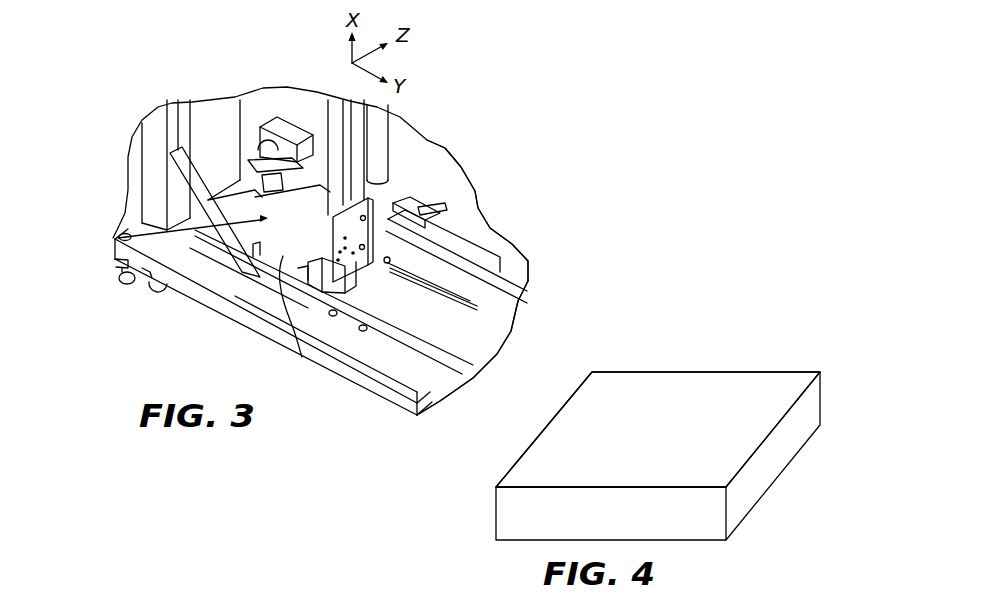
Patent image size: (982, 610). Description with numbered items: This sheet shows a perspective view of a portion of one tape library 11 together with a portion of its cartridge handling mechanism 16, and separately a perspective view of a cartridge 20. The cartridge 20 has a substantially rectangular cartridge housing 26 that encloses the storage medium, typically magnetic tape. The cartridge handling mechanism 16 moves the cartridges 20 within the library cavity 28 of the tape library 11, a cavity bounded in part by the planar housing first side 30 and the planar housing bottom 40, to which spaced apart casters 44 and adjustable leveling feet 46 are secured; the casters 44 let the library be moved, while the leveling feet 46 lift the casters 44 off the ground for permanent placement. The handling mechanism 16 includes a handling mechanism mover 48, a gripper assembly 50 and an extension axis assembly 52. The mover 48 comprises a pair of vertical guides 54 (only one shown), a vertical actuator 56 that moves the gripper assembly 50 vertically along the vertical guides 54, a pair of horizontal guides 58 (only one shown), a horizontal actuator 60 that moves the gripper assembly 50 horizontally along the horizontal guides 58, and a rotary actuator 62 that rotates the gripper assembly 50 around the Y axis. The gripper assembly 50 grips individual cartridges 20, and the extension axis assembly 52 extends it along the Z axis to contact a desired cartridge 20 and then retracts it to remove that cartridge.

In FIG. 3, the tape library 11 is at (494, 185).
In FIG. 3, the cartridge handling mechanism 16 is at (301, 173).
In FIG. 4, the cartridge 20 is at (755, 367).
In FIG. 4, the cartridge housing 26 is at (753, 408).
In FIG. 3, the library cavity 28 is at (477, 342).
In FIG. 3, the housing first side 30 is at (213, 110).
In FIG. 3, the housing bottom 40 is at (233, 306).
In FIG. 3, the caster 44 is at (158, 292).
In FIG. 3, the leveling foot 46 is at (124, 276).
In FIG. 3, the handling mechanism mover 48 is at (376, 283).
In FIG. 3, the gripper assembly 50 is at (262, 165).
In FIG. 3, the extension axis assembly 52 is at (282, 231).
In FIG. 3, the vertical guide 54 is at (372, 128).
In FIG. 3, the vertical actuator 56 is at (302, 358).
In FIG. 3, the horizontal guide 58 is at (470, 282).
In FIG. 3, the horizontal actuator 60 is at (258, 132).
In FIG. 3, the rotary actuator 62 is at (116, 239).